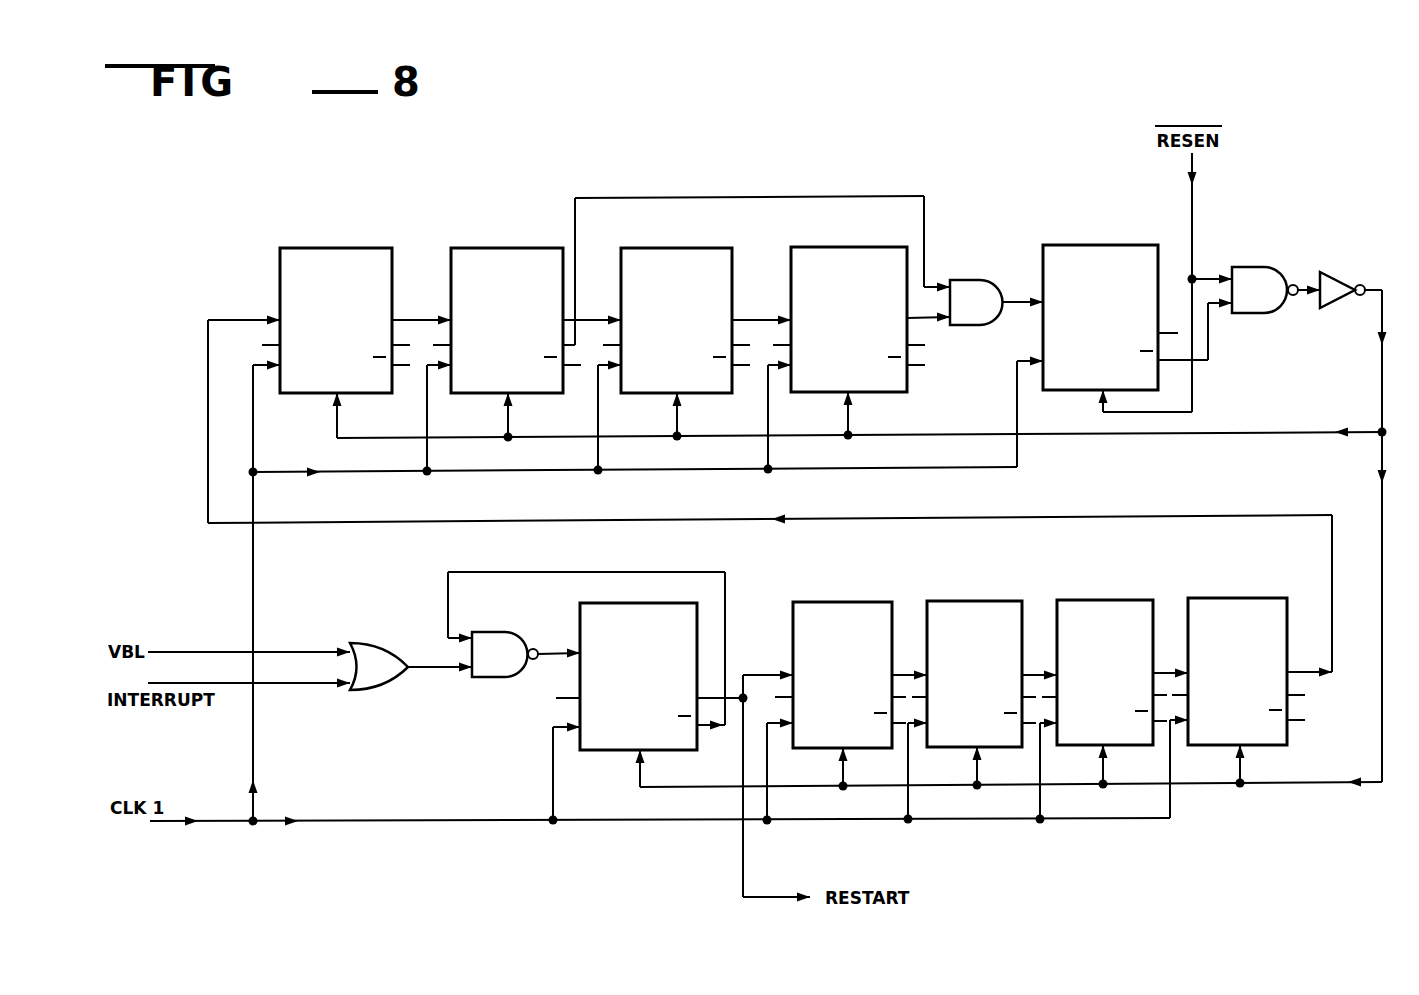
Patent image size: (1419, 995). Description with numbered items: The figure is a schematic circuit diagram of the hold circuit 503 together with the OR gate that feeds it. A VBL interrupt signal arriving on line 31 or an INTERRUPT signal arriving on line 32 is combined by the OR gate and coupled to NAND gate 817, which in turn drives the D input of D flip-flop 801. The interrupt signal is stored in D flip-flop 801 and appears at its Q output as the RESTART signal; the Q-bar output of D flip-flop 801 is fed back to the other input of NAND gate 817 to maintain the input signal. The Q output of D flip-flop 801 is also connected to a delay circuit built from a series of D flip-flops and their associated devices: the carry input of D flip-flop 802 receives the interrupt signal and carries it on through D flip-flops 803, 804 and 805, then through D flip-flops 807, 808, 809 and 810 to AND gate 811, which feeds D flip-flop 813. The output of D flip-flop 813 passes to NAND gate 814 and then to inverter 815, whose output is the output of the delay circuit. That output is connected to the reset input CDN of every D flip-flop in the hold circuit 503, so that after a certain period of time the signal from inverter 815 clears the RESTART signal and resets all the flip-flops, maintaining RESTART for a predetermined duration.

The hold circuit 503 is at (366, 678).
The line 31 is at (194, 651).
The line 32 is at (228, 686).
The D flip-flop 801 is at (628, 636).
The D flip-flop 802 is at (826, 634).
The D flip-flop 803 is at (958, 633).
The D flip-flop 804 is at (1088, 632).
The D flip-flop 805 is at (1221, 631).
The D flip-flop 807 is at (325, 290).
The D flip-flop 808 is at (490, 290).
The D flip-flop 809 is at (660, 290).
The D flip-flop 810 is at (832, 289).
The AND gate 811 is at (962, 313).
The D flip-flop 813 is at (1088, 286).
The NAND gate 814 is at (1242, 301).
The inverter 815 is at (1338, 283).
The NAND gate 817 is at (483, 665).